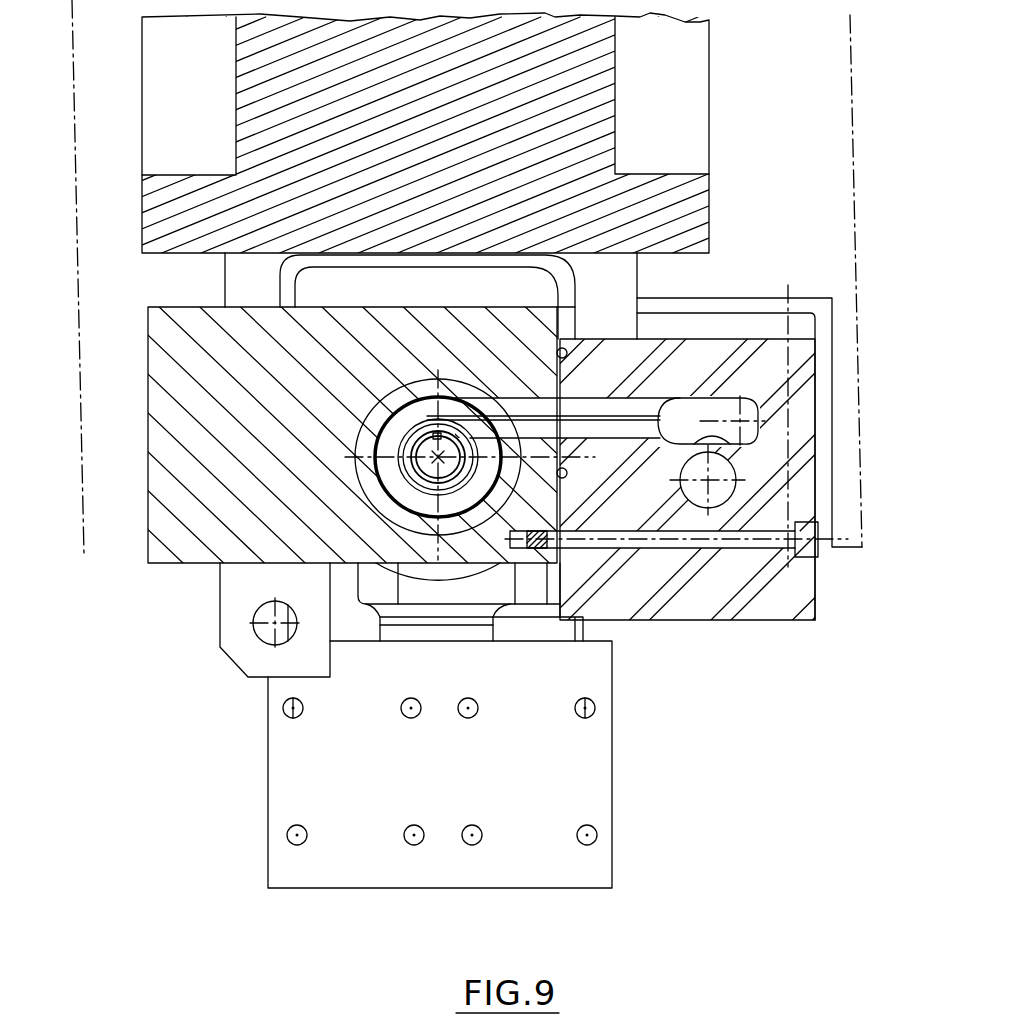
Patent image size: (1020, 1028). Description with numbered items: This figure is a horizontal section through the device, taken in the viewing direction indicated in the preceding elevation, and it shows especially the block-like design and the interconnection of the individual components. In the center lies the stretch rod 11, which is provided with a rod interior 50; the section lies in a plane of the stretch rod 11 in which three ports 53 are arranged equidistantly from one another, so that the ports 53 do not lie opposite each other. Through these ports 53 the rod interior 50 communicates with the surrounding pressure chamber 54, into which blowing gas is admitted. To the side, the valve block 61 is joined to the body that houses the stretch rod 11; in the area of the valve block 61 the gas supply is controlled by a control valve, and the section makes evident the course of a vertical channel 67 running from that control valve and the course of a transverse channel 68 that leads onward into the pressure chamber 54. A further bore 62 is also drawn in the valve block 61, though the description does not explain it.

The stretch rod 11 is at (430, 456).
The rod interior 50 is at (433, 470).
The ports 53 is at (437, 459).
The pressure chamber 54 is at (388, 430).
The valve block 61 is at (715, 598).
The bore 62 is at (721, 490).
The vertical channel 67 is at (740, 418).
The transverse channel 68 is at (727, 360).